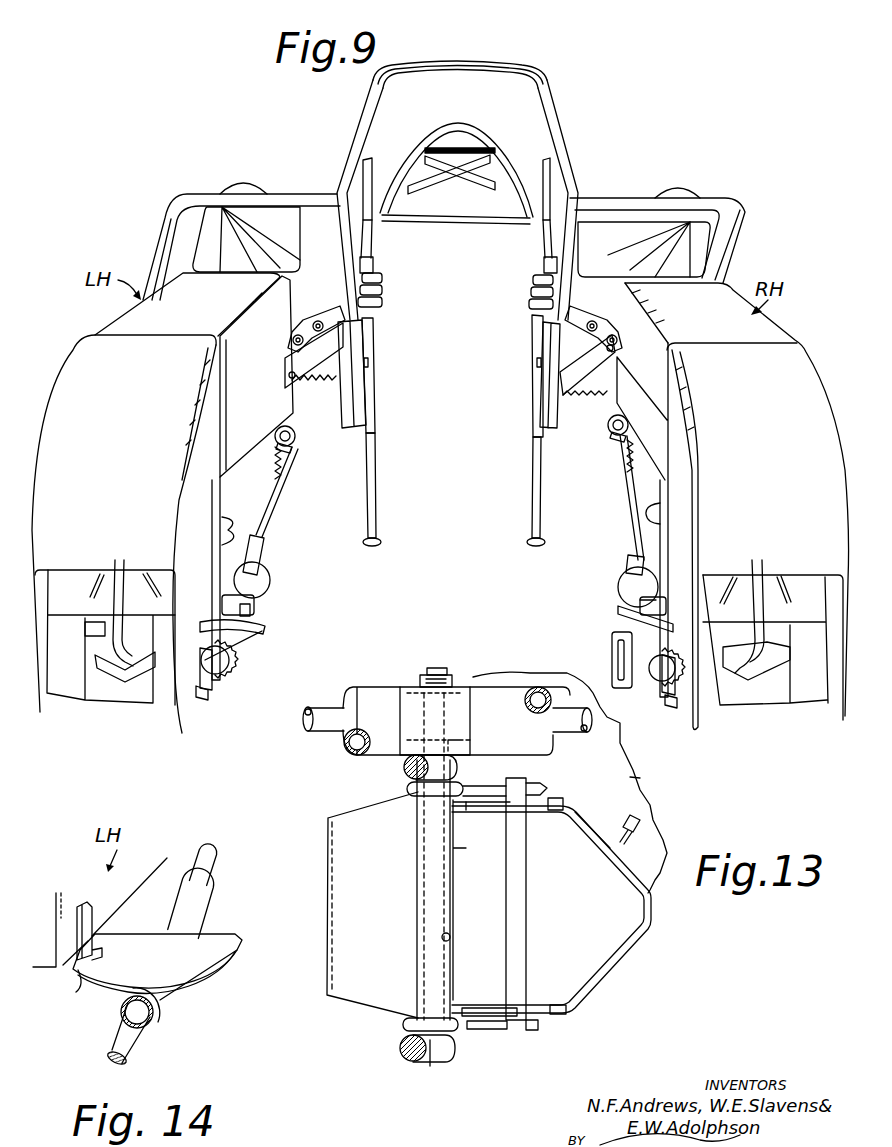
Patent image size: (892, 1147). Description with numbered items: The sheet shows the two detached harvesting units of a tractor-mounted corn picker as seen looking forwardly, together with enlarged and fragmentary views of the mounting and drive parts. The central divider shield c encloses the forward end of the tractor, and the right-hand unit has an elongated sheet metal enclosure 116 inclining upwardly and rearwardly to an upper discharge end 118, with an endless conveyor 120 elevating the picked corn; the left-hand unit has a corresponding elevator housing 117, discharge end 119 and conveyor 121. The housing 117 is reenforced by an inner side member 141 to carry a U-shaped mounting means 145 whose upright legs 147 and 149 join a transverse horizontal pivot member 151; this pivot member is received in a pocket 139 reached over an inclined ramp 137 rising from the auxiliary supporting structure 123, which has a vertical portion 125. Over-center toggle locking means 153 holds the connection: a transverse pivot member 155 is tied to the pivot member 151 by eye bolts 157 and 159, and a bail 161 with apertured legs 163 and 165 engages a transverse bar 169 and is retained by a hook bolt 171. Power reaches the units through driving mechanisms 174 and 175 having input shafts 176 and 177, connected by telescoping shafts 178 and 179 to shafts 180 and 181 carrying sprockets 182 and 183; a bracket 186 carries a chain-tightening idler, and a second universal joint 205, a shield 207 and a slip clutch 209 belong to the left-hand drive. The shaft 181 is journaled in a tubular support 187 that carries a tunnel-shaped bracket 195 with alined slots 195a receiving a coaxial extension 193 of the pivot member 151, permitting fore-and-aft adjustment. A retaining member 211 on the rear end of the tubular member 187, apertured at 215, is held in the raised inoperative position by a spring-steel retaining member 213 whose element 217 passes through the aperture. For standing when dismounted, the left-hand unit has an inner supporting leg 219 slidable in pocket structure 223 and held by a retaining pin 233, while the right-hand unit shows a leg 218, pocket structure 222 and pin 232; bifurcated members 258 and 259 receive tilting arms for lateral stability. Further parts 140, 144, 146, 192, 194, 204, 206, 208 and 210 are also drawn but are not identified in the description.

In FIG. 9, the central divider shield c is at (455, 66).
In FIG. 9, the elongated sheet metal enclosure 116 is at (763, 325).
In FIG. 9, the elevator housing 117 is at (108, 333).
In FIG. 14, the elevator housing 117 is at (165, 858).
In FIG. 9, the upper discharge end 118 is at (815, 697).
In FIG. 9, the upper discharge end 119 is at (62, 687).
In FIG. 9, the endless conveyor 120 is at (786, 661).
In FIG. 9, the endless conveyor 121 is at (125, 608).
In FIG. 13, the auxiliary supporting structure 123 is at (658, 795).
In FIG. 13, the vertical portion 125 is at (632, 777).
In FIG. 13, the inclined ramp 137 is at (367, 997).
In FIG. 13, the pocket 139 is at (450, 938).
In FIG. 9, the right side wall 140 is at (660, 493).
In FIG. 9, the inner side member 141 is at (223, 497).
In FIG. 9, the ball 144 is at (651, 583).
In FIG. 9, the U-shaped mounting means 145 is at (242, 582).
In FIG. 13, the U-shaped mounting means 145 is at (433, 1078).
In FIG. 9, the bracket 146 is at (648, 522).
In FIG. 9, the upright leg 147 is at (228, 540).
In FIG. 13, the upright leg 147 is at (405, 768).
In FIG. 13, the upright leg 149 is at (400, 1050).
In FIG. 13, the transverse horizontal pivot member 151 is at (427, 907).
In FIG. 13, the toggle locking means 153 is at (569, 1018).
In FIG. 13, the transverse pivot member 155 is at (526, 910).
In FIG. 13, the eye bolt 157 is at (473, 787).
In FIG. 13, the eye bolt 159 is at (492, 1031).
In FIG. 13, the bail 161 is at (600, 833).
In FIG. 13, the apertured leg 163 is at (557, 805).
In FIG. 13, the apertured leg 165 is at (557, 1015).
In FIG. 13, the transverse bar 169 is at (467, 1018).
In FIG. 13, the hook bolt 171 is at (636, 838).
In FIG. 9, the driving mechanism 174 is at (585, 390).
In FIG. 9, the driving mechanism 175 is at (317, 388).
In FIG. 9, the input shaft 176 is at (609, 421).
In FIG. 9, the input shaft 177 is at (296, 436).
In FIG. 9, the telescoping shaft means 178 is at (645, 491).
In FIG. 9, the telescoping shaft 179 is at (276, 495).
In FIG. 9, the shaft 180 is at (668, 712).
In FIG. 9, the shaft 181 is at (208, 688).
In FIG. 13, the shaft 181 is at (305, 727).
In FIG. 14, the shaft 181 is at (118, 1045).
In FIG. 9, the chain sprocket 182 is at (652, 676).
In FIG. 9, the driving sprocket 183 is at (232, 658).
In FIG. 9, the bracket 186 is at (614, 647).
In FIG. 9, the tubular support 187 is at (266, 629).
In FIG. 13, the tubular support 187 is at (392, 667).
In FIG. 14, the tubular support 187 is at (207, 903).
In FIG. 9, the block 192 is at (622, 615).
In FIG. 9, the coaxial extension 193 is at (262, 610).
In FIG. 13, the coaxial extension 193 is at (428, 667).
In FIG. 9, the block 194 is at (632, 600).
In FIG. 9, the bracket 195 is at (255, 597).
In FIG. 13, the bracket 195 is at (453, 693).
In FIG. 13, the alined slots 195a is at (493, 740).
In FIG. 9, the pivot 204 is at (611, 437).
In FIG. 9, the second universal joint 205 is at (292, 447).
In FIG. 9, the cylinder 206 is at (627, 568).
In FIG. 9, the shield 207 is at (262, 566).
In FIG. 9, the hub 208 is at (660, 698).
In FIG. 9, the slip clutch 209 is at (214, 678).
In FIG. 9, the bar 210 is at (618, 622).
In FIG. 9, the retaining member 211 is at (263, 632).
In FIG. 14, the retaining member 211 is at (207, 963).
In FIG. 14, the retaining member 213 is at (79, 991).
In FIG. 14, the aperture 215 is at (116, 998).
In FIG. 14, the spring element 217 is at (90, 950).
In FIG. 9, the leg 218 is at (532, 470).
In FIG. 9, the inner supporting leg 219 is at (377, 459).
In FIG. 9, the inner pocket structure 222 is at (540, 388).
In FIG. 9, the pocket structure 223 is at (372, 387).
In FIG. 9, the retaining pin 232 is at (536, 363).
In FIG. 9, the retaining pin 233 is at (370, 362).
In FIG. 9, the bifurcated member 258 is at (624, 477).
In FIG. 9, the bifurcated bracket 259 is at (284, 470).